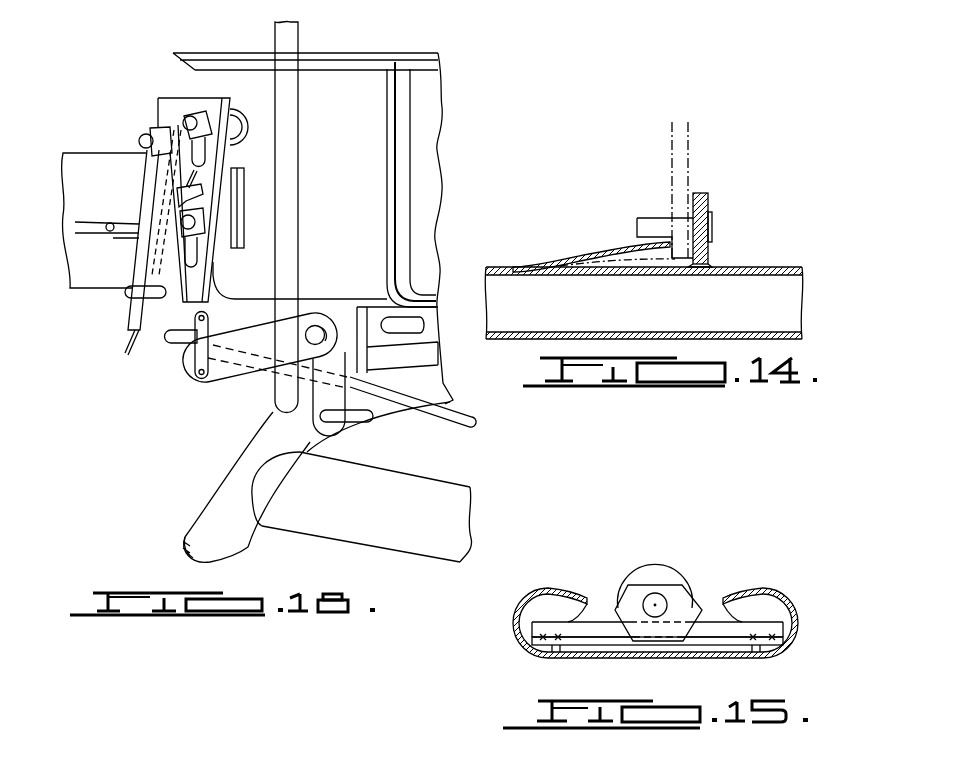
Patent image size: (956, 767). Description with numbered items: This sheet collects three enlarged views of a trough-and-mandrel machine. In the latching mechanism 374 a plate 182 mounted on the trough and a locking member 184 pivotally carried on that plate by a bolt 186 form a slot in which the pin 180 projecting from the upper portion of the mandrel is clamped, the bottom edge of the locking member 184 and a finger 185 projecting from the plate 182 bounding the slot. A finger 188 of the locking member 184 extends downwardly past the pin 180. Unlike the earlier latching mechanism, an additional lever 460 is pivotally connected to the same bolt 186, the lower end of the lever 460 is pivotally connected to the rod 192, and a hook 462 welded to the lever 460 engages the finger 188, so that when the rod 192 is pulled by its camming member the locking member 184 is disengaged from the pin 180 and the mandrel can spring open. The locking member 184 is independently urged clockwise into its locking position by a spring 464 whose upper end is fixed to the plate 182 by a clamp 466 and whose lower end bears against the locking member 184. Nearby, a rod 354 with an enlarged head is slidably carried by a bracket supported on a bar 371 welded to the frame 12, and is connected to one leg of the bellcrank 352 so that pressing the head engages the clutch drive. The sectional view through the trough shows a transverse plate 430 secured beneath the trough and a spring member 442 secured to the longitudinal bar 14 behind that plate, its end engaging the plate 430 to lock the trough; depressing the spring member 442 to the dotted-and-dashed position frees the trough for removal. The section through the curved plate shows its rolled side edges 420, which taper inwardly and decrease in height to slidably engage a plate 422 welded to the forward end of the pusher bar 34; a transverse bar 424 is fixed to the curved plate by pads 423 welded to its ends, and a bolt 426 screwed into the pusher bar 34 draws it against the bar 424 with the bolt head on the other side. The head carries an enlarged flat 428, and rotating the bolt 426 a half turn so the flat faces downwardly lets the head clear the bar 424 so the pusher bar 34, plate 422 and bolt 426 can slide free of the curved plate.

In FIG. 18, the frame 12 is at (178, 494).
In FIG. 14, the longitudinal bar 14 is at (743, 267).
In FIG. 15, the pusher bar 34 is at (653, 565).
In FIG. 18, the pin 180 is at (118, 232).
In FIG. 18, the plate 182 is at (206, 260).
In FIG. 18, the locking member 184 is at (140, 178).
In FIG. 18, the finger 185 is at (107, 229).
In FIG. 18, the bolt 186 is at (142, 140).
In FIG. 18, the finger 188 is at (120, 335).
In FIG. 18, the rod 192 is at (455, 407).
In FIG. 18, the bellcrank 352 is at (227, 380).
In FIG. 18, the rod 354 is at (240, 322).
In FIG. 18, the bar 371 is at (292, 100).
In FIG. 18, the latching mechanism 374 is at (110, 230).
In FIG. 15, the rolled side edges 420 is at (550, 592).
In FIG. 15, the plate 422 is at (610, 648).
In FIG. 15, the pads 423 is at (560, 658).
In FIG. 15, the bar 424 is at (710, 630).
In FIG. 15, the bolt 426 is at (635, 597).
In FIG. 15, the enlarged flat 428 is at (663, 583).
In FIG. 14, the transverse plate 430 is at (683, 162).
In FIG. 14, the spring member 442 is at (607, 258).
In FIG. 18, the lever 460 is at (95, 220).
In FIG. 18, the hook 462 is at (127, 293).
In FIG. 18, the spring 464 is at (205, 168).
In FIG. 18, the clamp 466 is at (203, 197).